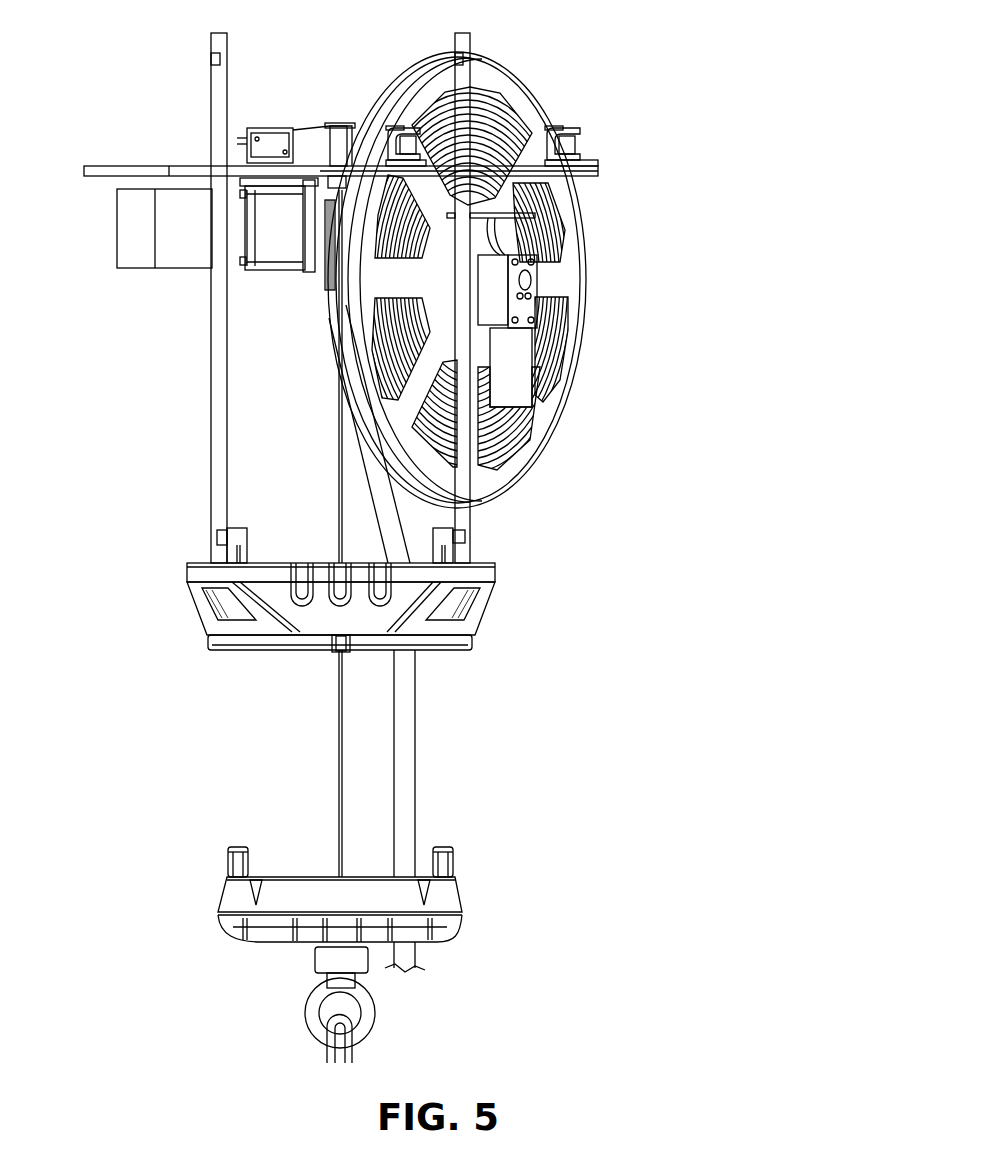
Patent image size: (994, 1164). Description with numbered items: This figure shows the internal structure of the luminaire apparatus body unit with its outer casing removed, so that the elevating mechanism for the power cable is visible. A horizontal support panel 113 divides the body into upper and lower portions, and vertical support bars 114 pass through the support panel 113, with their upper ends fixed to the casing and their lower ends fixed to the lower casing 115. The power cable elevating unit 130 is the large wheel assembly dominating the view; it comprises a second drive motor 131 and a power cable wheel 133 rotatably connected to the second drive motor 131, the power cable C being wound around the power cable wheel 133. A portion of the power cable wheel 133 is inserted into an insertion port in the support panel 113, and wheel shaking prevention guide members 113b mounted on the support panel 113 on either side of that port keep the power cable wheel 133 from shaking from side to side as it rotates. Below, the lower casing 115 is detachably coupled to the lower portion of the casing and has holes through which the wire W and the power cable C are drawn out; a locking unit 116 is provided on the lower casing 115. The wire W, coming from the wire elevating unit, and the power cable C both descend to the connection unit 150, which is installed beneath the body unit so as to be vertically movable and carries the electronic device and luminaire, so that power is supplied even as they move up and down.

The support bar 114 is at (465, 78).
The support panel 113 is at (585, 172).
The wheel shaking prevention guide member 113b is at (572, 128).
The power cable elevating unit 130 is at (606, 250).
The power cable wheel 133 is at (560, 284).
The second drive motor 131 is at (523, 308).
The power cable C is at (388, 513).
The wire W is at (340, 742).
The locking unit 116 is at (447, 538).
The lower casing 115 is at (487, 603).
The connection unit 150 is at (498, 896).